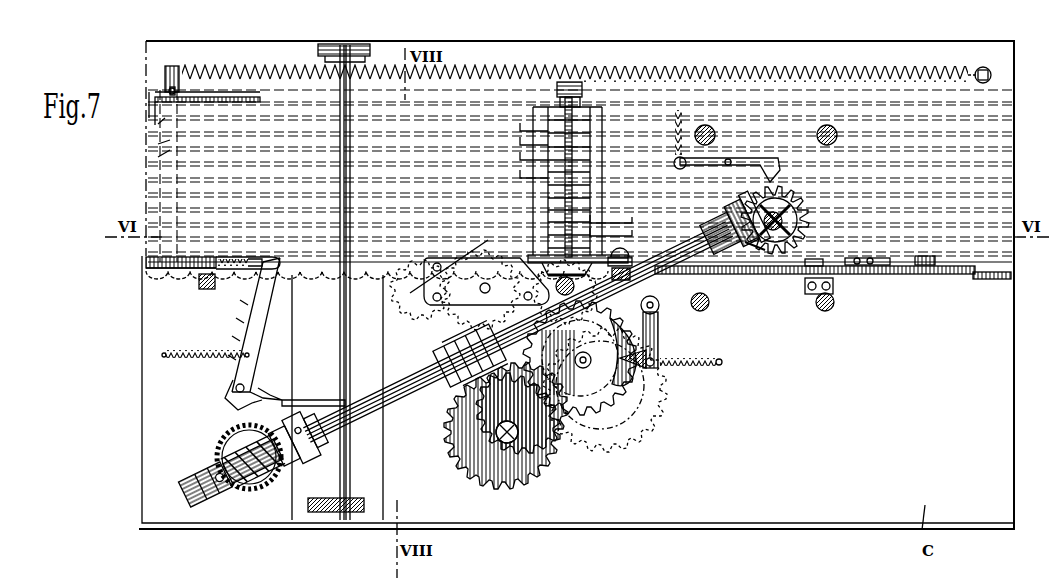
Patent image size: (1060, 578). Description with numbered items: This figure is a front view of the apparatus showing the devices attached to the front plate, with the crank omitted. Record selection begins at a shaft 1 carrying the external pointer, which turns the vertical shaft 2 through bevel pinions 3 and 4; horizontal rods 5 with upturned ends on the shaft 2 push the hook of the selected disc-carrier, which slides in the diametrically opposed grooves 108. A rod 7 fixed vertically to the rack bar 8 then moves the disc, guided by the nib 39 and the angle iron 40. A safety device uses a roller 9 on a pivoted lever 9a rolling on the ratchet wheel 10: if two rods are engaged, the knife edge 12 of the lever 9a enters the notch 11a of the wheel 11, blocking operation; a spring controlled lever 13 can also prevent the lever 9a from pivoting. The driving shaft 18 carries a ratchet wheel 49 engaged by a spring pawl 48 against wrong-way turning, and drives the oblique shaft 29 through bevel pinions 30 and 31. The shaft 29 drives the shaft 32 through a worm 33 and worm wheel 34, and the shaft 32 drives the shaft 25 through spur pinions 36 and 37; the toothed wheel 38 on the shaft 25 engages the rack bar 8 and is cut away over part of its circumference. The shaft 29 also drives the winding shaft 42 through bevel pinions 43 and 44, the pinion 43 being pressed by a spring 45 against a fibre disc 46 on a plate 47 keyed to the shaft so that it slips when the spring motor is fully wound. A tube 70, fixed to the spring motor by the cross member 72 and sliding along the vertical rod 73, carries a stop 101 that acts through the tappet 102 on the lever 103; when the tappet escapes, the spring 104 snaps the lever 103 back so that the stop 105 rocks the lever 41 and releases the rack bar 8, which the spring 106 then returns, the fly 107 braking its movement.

The shaft 1 is at (565, 292).
The vertical shaft 2 is at (545, 196).
The bevel pinion 3 is at (580, 358).
The bevel pinion 4 is at (562, 252).
The horizontal rods 5 is at (612, 236).
The rod 7 is at (172, 68).
The rack bar 8 is at (672, 270).
The roller 9 is at (628, 250).
The pivoted lever 9a is at (660, 328).
The ratchet wheel 10 is at (538, 262).
The wheel 11 is at (640, 332).
The notch 11a is at (628, 366).
The knife edge 12 is at (665, 362).
The spring controlled lever 13 is at (740, 258).
The shaft 18 is at (795, 225).
The shaft 25 is at (590, 365).
The oblique shaft 29 is at (320, 415).
The bevel pinion 30 is at (790, 215).
The bevel pinion 31 is at (755, 255).
The shaft 32 is at (505, 445).
The worm 33 is at (462, 372).
The worm wheel 34 is at (475, 470).
The spur pinion 36 is at (553, 455).
The spur pinion 37 is at (585, 415).
The toothed wheel 38 is at (642, 425).
The nib 39 is at (168, 89).
The angle iron 40 is at (206, 98).
The lever 41 is at (185, 270).
The shaft 42 is at (258, 478).
The bevel pinion 43 is at (285, 478).
The bevel pinion 44 is at (242, 486).
The spring 45 is at (203, 474).
The fibre disc 46 is at (302, 476).
The plate 47 is at (300, 470).
The spring pawl 48 is at (745, 160).
The ratchet wheel 49 is at (800, 205).
The tube 70 is at (345, 440).
The cross member 72 is at (356, 512).
The vertical rod 73 is at (350, 80).
The stop 101 is at (300, 398).
The tappet 102 is at (262, 407).
The lever 103 is at (262, 318).
The spring 104 is at (190, 357).
The stop 105 is at (268, 272).
The spring 106 is at (150, 160).
The fly 107 is at (428, 290).
The grooves 108 is at (158, 157).